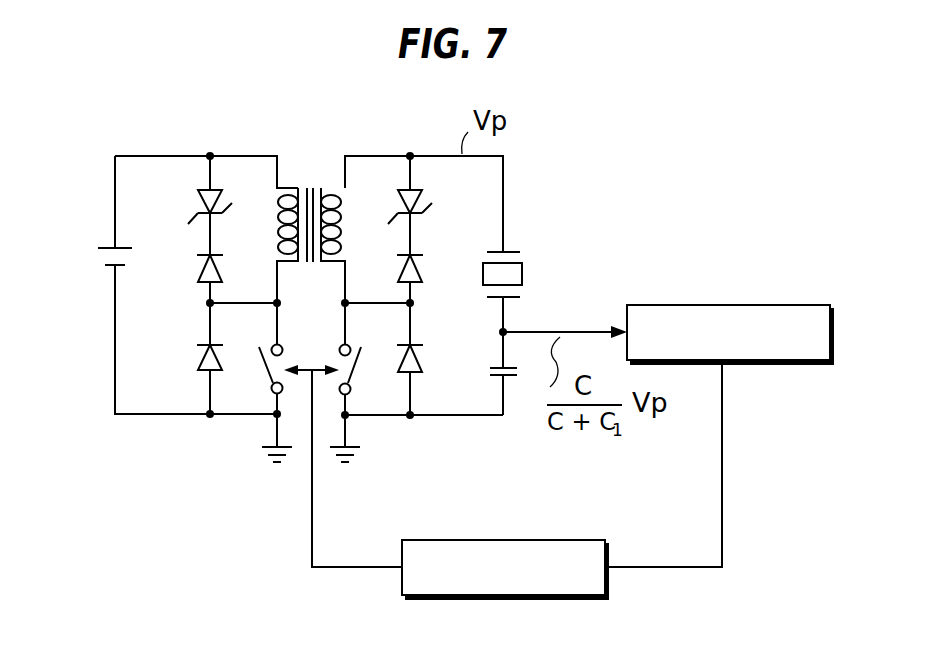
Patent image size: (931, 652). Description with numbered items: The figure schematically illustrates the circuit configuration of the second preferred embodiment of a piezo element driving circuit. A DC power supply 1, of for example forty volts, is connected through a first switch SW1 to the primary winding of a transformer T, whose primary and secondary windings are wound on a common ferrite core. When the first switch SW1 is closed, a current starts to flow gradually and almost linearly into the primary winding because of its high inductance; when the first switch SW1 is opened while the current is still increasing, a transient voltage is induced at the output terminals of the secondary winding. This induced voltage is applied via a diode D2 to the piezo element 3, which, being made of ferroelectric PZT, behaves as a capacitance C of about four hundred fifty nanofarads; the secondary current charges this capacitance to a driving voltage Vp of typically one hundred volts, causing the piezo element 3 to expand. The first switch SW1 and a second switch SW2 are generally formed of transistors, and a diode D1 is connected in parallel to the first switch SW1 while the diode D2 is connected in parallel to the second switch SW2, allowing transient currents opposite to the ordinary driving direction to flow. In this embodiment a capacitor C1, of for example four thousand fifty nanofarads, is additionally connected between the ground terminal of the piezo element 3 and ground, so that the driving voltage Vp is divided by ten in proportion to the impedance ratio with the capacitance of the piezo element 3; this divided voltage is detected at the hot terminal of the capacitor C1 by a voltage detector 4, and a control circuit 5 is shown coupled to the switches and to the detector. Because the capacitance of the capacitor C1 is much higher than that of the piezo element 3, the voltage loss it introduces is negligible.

The DC power supply 1 is at (112, 248).
The piezo element 3 is at (497, 246).
The voltage detector 4 is at (727, 305).
The control circuit 5 is at (503, 540).
The transformer T is at (309, 186).
The diode D1 is at (197, 355).
The diode D2 is at (423, 355).
The first switch SW1 is at (265, 362).
The second switch SW2 is at (356, 363).
The capacitor C1 is at (489, 372).